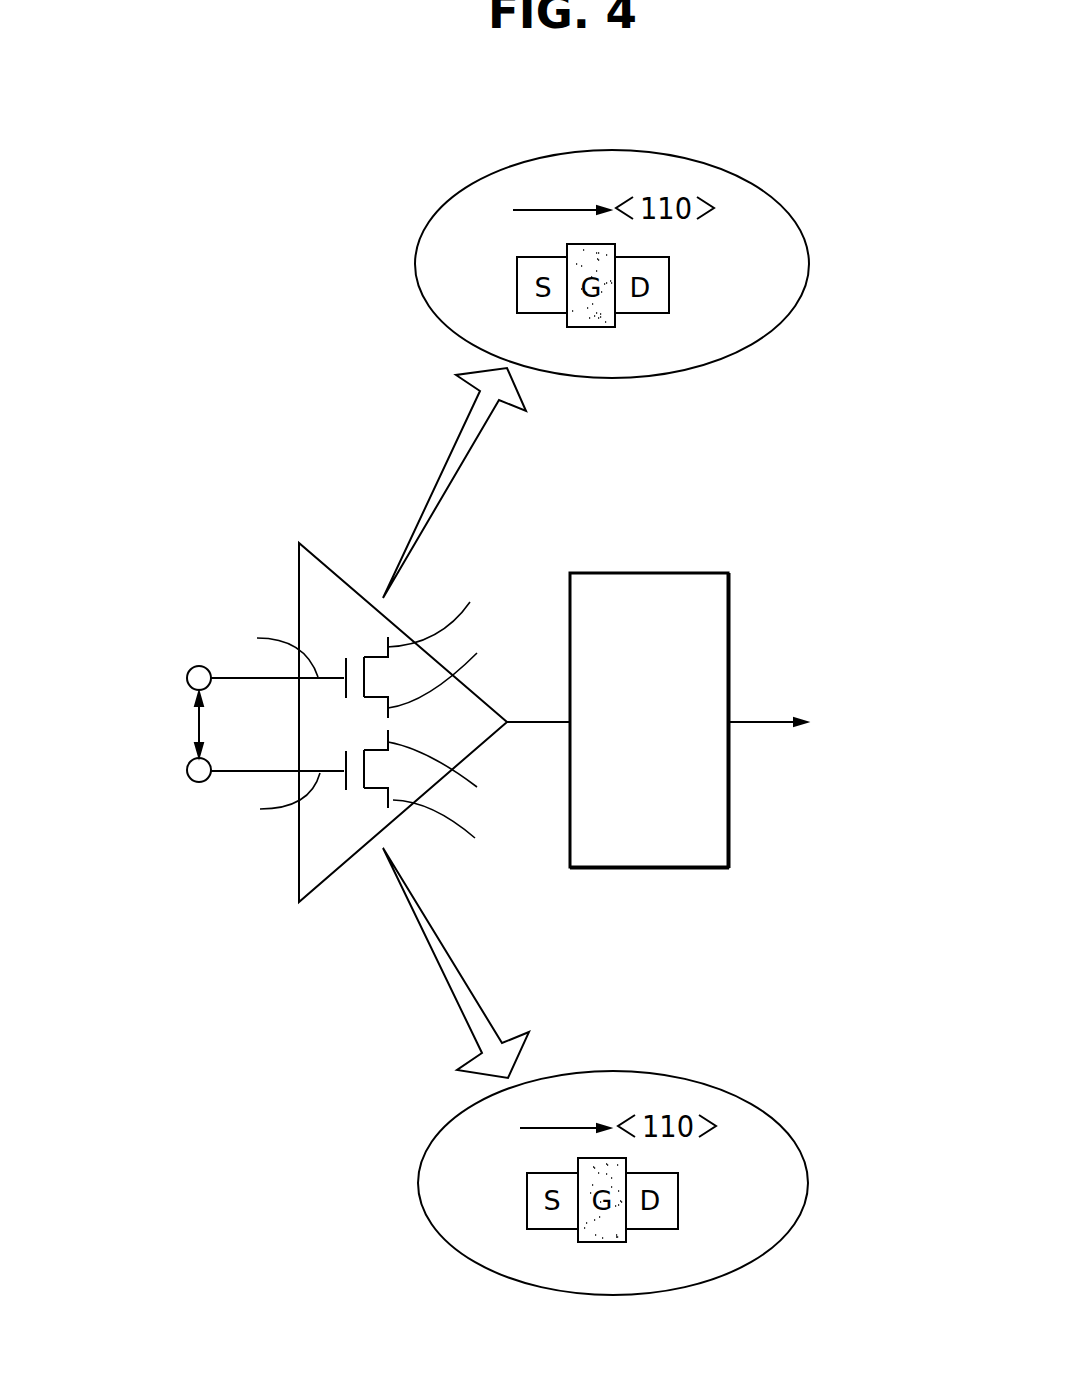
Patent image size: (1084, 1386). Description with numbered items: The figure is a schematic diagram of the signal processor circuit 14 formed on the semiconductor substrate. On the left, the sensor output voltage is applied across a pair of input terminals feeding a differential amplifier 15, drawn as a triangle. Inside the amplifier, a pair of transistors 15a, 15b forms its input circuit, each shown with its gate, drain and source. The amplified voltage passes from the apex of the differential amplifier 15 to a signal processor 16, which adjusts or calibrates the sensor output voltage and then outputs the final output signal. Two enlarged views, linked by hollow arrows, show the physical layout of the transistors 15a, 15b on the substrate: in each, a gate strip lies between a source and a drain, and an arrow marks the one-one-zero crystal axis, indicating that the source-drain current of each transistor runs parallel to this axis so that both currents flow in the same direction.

The signal processor circuit 14 is at (564, 524).
The differential amplifier 15 is at (327, 887).
The transistor 15a is at (337, 637).
The transistor 15b is at (335, 807).
The signal processor 16 is at (645, 573).